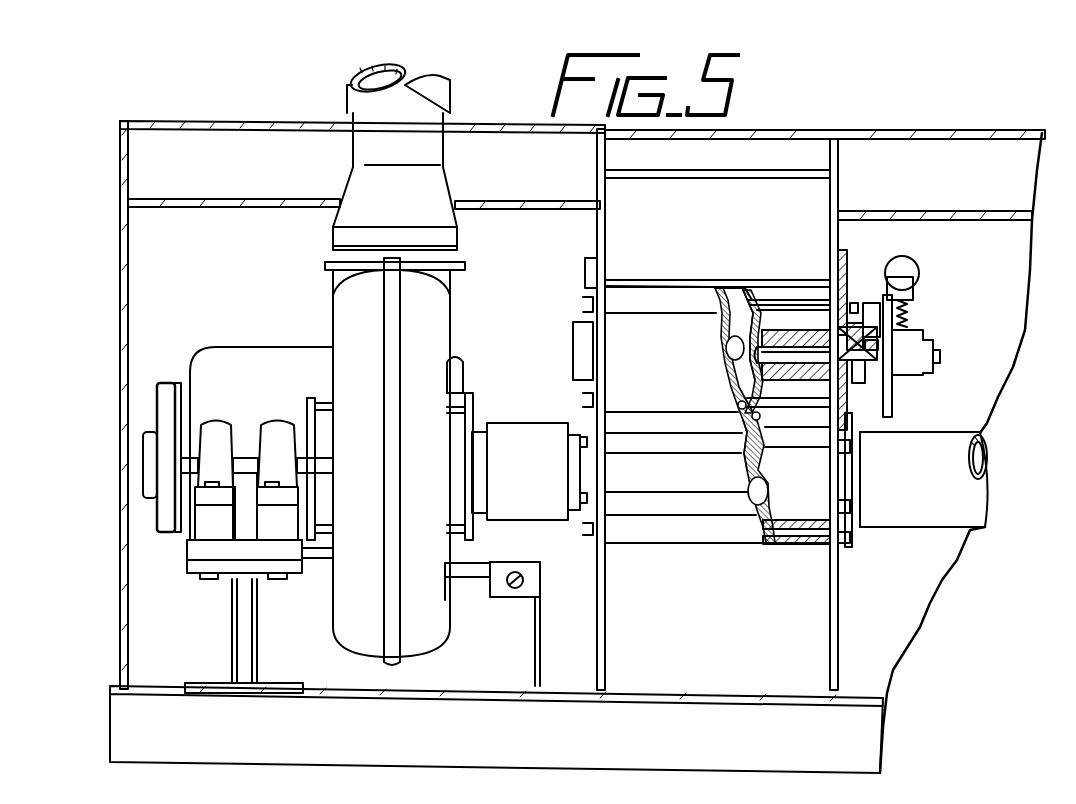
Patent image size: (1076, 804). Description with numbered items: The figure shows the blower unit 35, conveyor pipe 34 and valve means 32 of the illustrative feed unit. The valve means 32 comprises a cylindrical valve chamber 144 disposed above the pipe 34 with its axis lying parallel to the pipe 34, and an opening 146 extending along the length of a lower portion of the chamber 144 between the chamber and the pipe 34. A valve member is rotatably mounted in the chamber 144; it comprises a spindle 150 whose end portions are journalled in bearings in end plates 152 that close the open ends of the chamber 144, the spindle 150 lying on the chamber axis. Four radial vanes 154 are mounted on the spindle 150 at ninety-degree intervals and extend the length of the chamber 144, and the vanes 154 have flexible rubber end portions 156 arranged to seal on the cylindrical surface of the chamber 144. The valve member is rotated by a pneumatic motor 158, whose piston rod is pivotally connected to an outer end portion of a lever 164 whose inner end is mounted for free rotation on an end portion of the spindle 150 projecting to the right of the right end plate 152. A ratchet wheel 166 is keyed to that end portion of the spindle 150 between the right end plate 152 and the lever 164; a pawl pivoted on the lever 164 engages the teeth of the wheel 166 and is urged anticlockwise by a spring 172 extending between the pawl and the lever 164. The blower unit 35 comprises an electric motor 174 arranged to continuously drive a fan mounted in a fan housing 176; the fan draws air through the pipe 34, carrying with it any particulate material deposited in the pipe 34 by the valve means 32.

The blower unit 35 is at (282, 318).
The fan housing 176 is at (360, 298).
The electric motor 174 is at (256, 397).
The valve means 32 is at (568, 343).
The end plates 152 is at (596, 268).
The flexible rubber end portions 156 is at (738, 296).
The spindle 150 is at (788, 350).
The cylindrical valve chamber 144 is at (720, 332).
The radial vanes 154 is at (742, 380).
The opening 146 is at (782, 435).
The pipe 34 is at (760, 522).
The pneumatic motor 158 is at (918, 270).
The spring 172 is at (905, 320).
The lever 164 is at (905, 360).
The ratchet wheel 166 is at (887, 393).